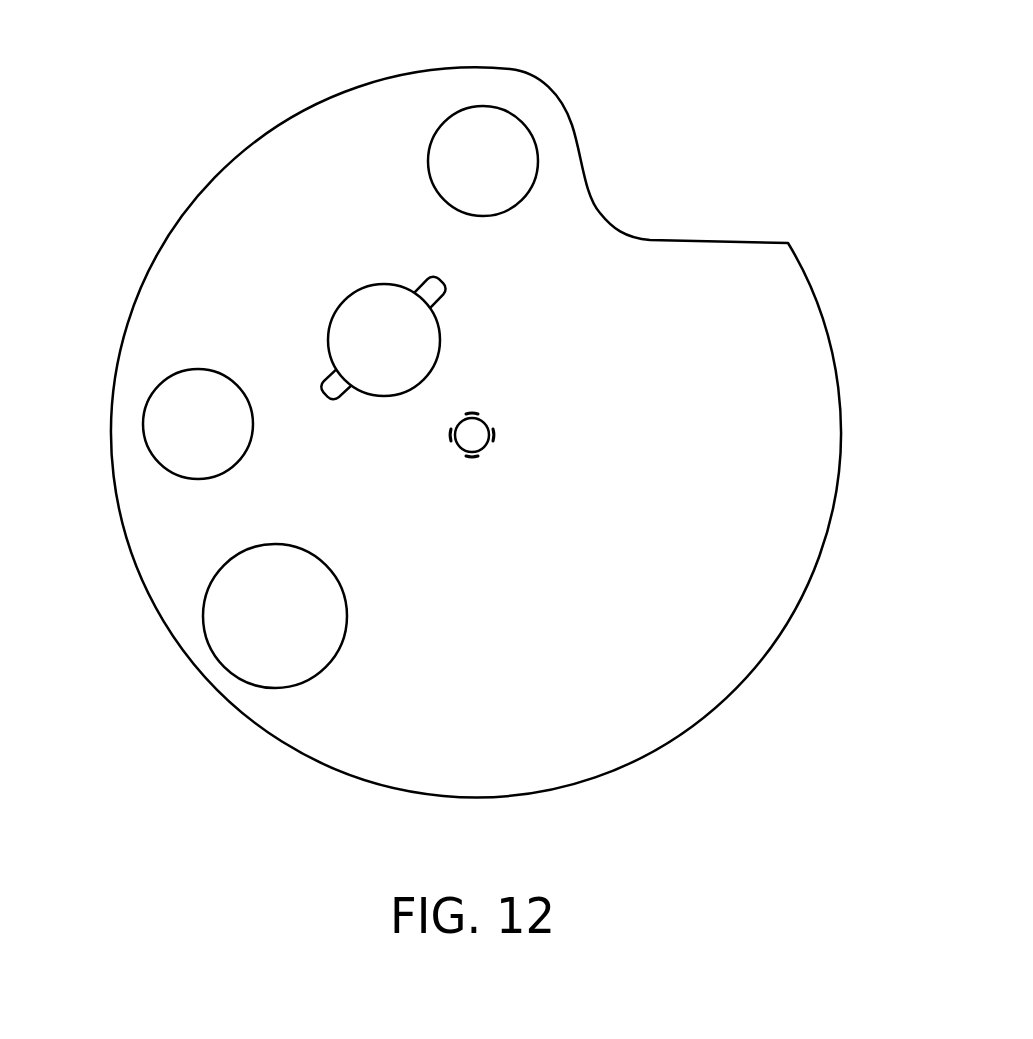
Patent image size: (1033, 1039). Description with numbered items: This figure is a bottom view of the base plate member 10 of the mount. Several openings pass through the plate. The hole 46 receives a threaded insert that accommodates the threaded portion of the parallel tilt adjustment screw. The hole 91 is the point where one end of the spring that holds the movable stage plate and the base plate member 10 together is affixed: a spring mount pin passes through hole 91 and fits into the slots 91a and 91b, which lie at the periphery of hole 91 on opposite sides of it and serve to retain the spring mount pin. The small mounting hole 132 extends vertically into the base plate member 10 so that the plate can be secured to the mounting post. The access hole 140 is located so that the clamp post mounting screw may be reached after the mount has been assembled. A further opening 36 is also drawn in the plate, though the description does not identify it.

The base plate member 10 is at (488, 432).
The opening 36 is at (525, 130).
The hole 46 is at (141, 396).
The hole 91 is at (364, 324).
The slot 91a is at (368, 396).
The slot 91b is at (466, 300).
The mounting hole 132 is at (518, 417).
The access hole 140 is at (204, 616).